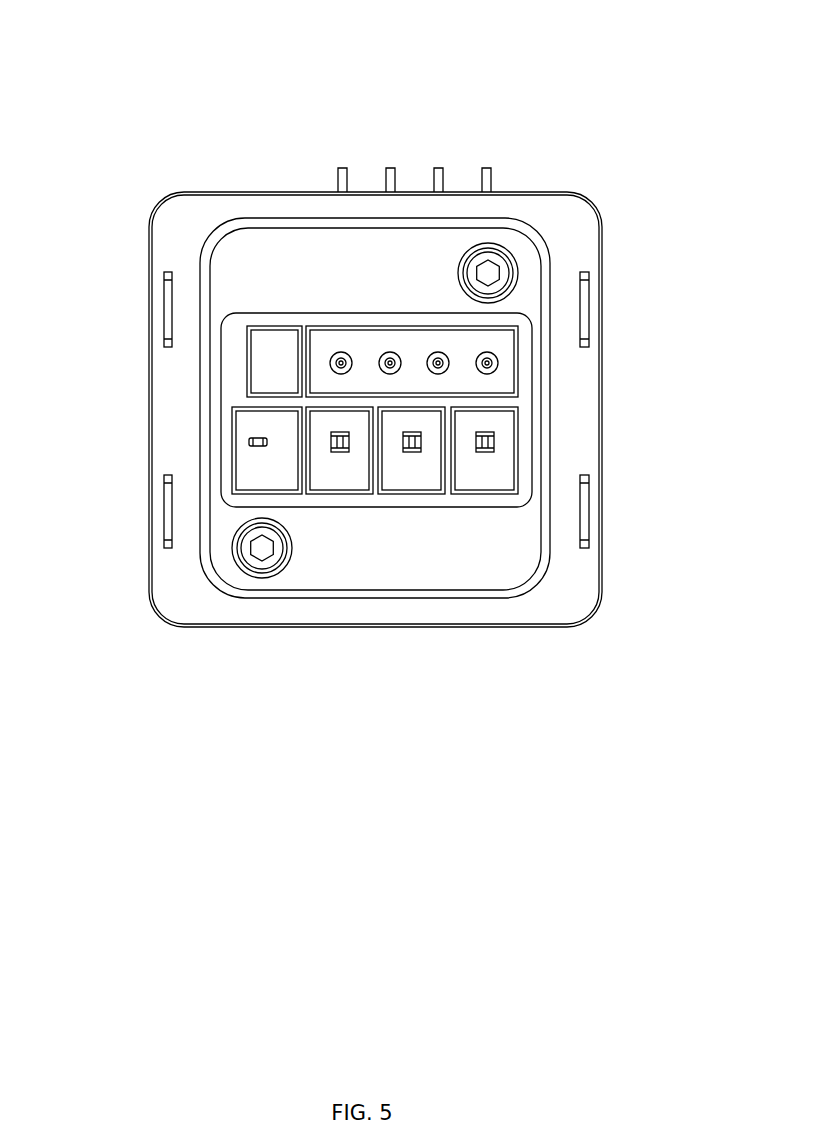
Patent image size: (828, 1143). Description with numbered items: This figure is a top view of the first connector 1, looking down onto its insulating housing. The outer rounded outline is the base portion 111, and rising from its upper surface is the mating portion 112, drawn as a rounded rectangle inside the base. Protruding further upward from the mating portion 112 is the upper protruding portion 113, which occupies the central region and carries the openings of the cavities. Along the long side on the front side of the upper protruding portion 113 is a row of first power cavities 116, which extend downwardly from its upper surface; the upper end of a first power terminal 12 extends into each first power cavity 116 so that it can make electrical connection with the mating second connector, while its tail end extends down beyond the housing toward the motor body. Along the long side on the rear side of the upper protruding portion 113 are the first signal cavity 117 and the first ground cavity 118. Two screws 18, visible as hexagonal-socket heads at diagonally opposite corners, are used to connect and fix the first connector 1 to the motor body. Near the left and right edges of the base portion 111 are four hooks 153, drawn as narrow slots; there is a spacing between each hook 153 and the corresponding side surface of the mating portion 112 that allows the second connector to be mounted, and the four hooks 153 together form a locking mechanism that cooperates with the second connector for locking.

The first connector 1 is at (95, 32).
The base portion 111 is at (550, 213).
The mating portion 112 is at (250, 242).
The upper protruding portion 113 is at (448, 551).
The first power cavity 116 is at (558, 551).
The first power terminal 12 is at (492, 437).
The first signal cavity 117 is at (503, 347).
The first ground cavity 118 is at (257, 362).
The screw 18 is at (263, 560).
The hook 153 is at (172, 505).